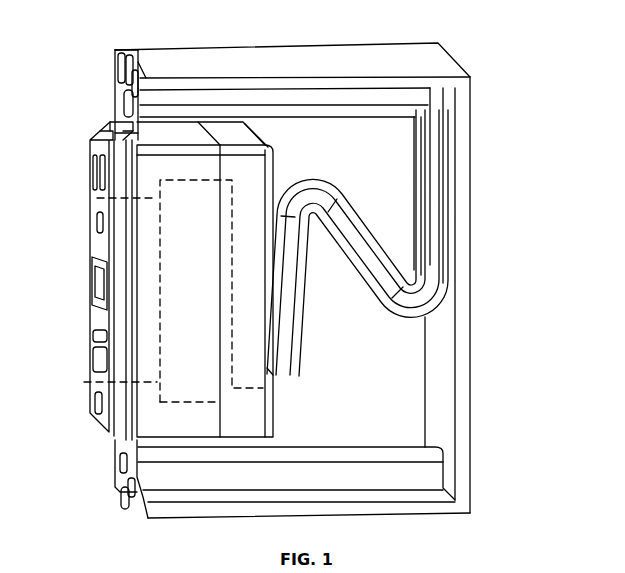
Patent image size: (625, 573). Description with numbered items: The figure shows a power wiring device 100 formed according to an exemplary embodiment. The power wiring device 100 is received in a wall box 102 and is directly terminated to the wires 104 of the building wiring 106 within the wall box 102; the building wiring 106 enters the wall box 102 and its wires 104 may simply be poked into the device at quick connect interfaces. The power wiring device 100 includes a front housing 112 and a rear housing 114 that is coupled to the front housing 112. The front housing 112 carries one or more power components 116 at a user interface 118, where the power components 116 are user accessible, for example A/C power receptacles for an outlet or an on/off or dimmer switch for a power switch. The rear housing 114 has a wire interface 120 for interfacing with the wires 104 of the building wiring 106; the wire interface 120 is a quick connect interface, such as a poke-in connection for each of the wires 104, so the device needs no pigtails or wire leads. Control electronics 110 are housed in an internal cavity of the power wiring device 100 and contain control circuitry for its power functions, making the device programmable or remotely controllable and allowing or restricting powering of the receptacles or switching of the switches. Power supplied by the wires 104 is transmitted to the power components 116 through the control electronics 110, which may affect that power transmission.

The power wiring device 100 is at (314, 262).
The wall box 102 is at (323, 63).
The wires 104 is at (443, 298).
The building wiring 106 is at (459, 190).
The control electronics 110 is at (178, 402).
The front housing 112 is at (185, 132).
The rear housing 114 is at (237, 127).
The power components 116 is at (91, 180).
The user interface 118 is at (96, 380).
The wire interface 120 is at (273, 370).